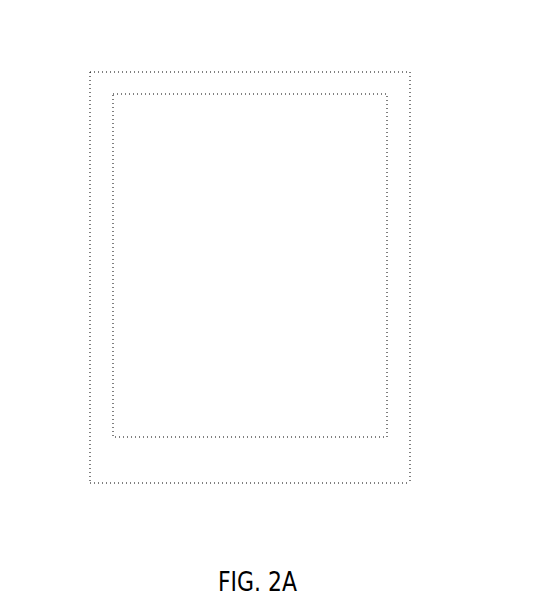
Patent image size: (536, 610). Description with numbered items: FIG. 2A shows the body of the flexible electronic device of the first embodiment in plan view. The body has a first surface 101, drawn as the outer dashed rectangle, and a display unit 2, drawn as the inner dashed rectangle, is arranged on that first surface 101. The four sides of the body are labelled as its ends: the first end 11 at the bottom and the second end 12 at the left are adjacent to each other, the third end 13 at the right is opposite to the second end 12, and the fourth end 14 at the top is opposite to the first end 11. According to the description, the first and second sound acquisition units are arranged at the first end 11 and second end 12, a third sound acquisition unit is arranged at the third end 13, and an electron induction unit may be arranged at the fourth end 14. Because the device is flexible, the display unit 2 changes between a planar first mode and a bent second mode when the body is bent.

The display unit 2 is at (375, 128).
The first surface 101 is at (257, 280).
The first end 11 is at (250, 483).
The second end 12 is at (90, 280).
The third end 13 is at (410, 278).
The fourth end 14 is at (252, 72).